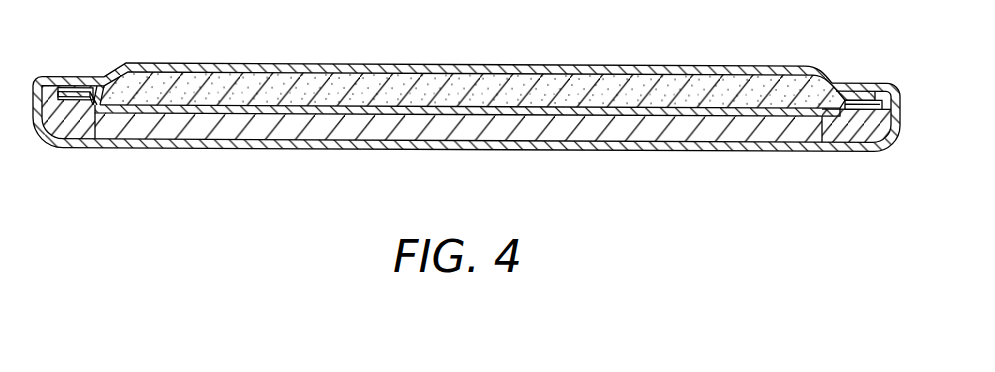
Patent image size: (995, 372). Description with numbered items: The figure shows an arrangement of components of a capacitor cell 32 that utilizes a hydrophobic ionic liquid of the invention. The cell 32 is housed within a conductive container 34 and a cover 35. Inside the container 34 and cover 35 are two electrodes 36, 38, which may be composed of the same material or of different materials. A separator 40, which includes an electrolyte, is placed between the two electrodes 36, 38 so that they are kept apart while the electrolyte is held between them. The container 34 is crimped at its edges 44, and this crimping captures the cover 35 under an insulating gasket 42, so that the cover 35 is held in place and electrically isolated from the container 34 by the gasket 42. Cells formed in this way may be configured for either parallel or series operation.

The cell 32 is at (178, 165).
The conductive container 34 is at (778, 149).
The cover 35 is at (670, 66).
The electrode 36 is at (538, 128).
The electrode 38 is at (520, 78).
The separator 40 is at (695, 114).
The insulating gasket 42 is at (883, 150).
The edges 44 is at (36, 77).